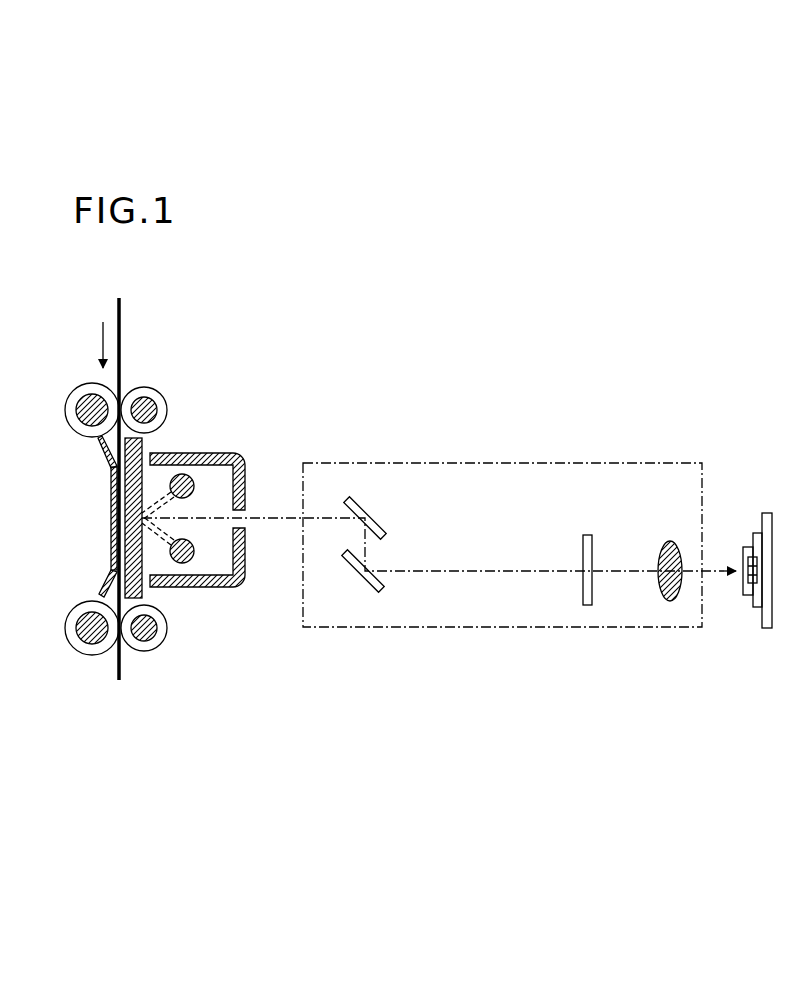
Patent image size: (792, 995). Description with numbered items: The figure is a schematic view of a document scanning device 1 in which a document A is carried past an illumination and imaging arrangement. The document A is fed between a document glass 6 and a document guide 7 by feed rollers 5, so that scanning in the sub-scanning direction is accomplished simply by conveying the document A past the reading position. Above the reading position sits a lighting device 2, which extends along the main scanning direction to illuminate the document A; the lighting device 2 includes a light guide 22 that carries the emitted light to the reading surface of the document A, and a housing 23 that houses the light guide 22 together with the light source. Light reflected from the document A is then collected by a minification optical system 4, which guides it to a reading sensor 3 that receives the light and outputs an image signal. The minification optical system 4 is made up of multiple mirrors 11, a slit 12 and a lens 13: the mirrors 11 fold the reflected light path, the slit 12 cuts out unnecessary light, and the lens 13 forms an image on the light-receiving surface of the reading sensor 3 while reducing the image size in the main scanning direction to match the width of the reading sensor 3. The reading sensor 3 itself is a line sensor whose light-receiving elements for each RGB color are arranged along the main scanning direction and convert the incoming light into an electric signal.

The document scanning device 1 is at (504, 519).
The lighting device 2 is at (204, 539).
The reading sensor 3 is at (745, 578).
The minification optical system 4 is at (502, 519).
The feed rollers 5 is at (65, 413).
The document glass 6 is at (142, 450).
The document guide 7 is at (111, 540).
The mirrors 11 is at (372, 509).
The slit 12 is at (587, 535).
The lens 13 is at (672, 541).
The light guide 22 is at (193, 478).
The housing 23 is at (213, 453).
The document A is at (120, 347).